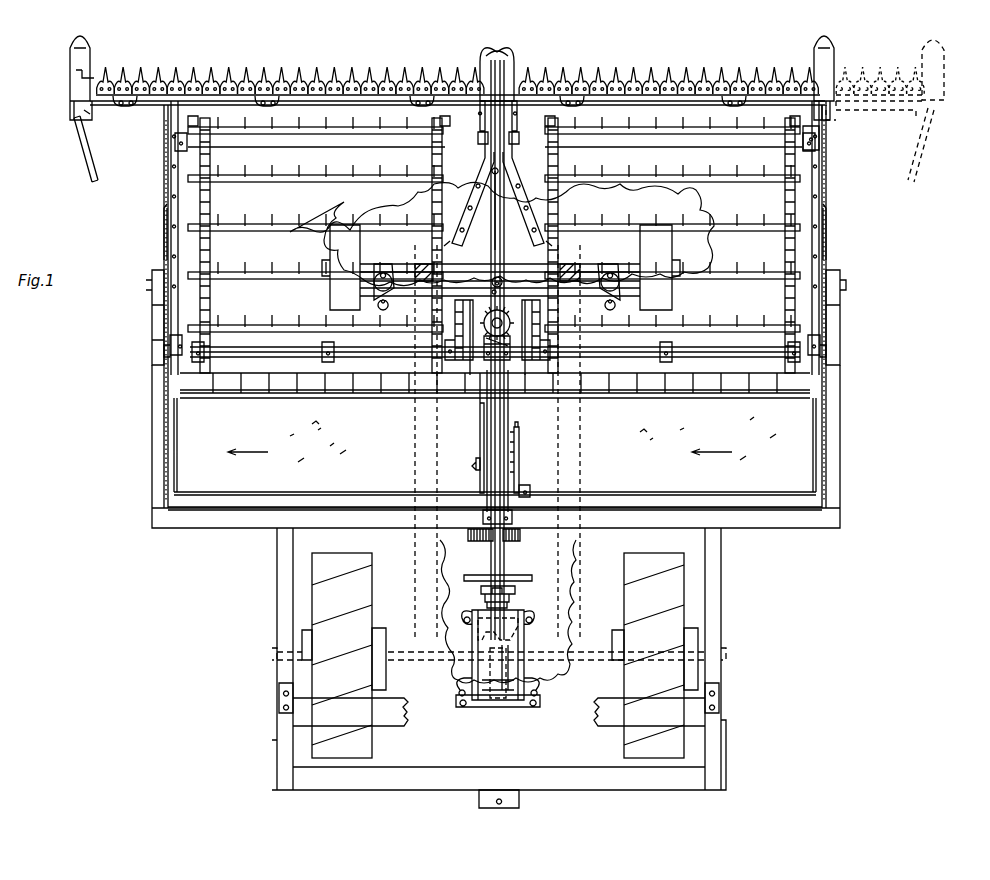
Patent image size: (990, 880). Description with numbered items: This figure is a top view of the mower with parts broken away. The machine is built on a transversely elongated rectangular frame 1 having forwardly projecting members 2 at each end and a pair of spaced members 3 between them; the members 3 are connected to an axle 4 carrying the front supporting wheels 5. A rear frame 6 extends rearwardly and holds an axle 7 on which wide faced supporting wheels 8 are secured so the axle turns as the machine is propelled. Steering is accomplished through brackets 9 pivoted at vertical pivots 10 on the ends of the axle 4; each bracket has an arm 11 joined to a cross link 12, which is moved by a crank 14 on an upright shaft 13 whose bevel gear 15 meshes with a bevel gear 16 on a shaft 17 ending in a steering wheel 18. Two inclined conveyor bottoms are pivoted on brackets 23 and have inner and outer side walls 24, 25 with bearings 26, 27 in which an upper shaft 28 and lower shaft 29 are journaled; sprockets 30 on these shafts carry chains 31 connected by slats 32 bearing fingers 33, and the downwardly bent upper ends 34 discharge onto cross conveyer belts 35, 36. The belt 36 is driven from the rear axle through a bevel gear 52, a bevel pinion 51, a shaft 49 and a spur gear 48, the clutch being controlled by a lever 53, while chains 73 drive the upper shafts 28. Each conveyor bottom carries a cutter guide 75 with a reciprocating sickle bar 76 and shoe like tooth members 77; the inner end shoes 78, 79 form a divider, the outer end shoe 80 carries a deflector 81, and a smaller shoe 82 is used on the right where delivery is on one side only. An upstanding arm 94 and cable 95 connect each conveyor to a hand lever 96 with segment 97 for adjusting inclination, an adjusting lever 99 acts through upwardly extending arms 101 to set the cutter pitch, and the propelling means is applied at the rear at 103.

The frame 1 is at (152, 415).
The forwardly projecting members 2 is at (152, 320).
The spaced members 3 is at (416, 320).
The axle 4 is at (504, 270).
The front supporting wheels 5 is at (501, 267).
The rear frame 6 is at (278, 616).
The rear axle 7 is at (535, 652).
The wide faced supporting wheels 8 is at (344, 566).
The brackets 9 is at (363, 292).
The vertical pivots 10 is at (384, 266).
The arm 11 is at (376, 300).
The cross link 12 is at (447, 284).
The upright shaft 13 is at (482, 360).
The crank 14 is at (494, 276).
The bevel gear 15 is at (508, 322).
The bevel gear 16 is at (516, 360).
The steering shaft 17 is at (488, 472).
The steering wheel 18 is at (532, 578).
The upwardly extending brackets 23 is at (418, 264).
The inner side walls 24 is at (476, 180).
The outer side walls 25 is at (165, 185).
The bearings 26 is at (170, 154).
The bearings 27 is at (822, 153).
The upper shaft 28 is at (244, 352).
The lower shaft 29 is at (262, 160).
The sprockets 30 is at (70, 66).
The chains 31 is at (193, 243).
The slats 32 is at (236, 282).
The fingers 33 is at (276, 226).
The downwardly bent upper ends 34 is at (296, 388).
The conveyer belt 35 is at (708, 438).
The conveyer belt 36 is at (495, 454).
The spur gear 48 is at (476, 542).
The shaft 49 is at (512, 540).
The bevel pinion 51 is at (478, 630).
The bevel gear 52 is at (503, 692).
The clutch lever 53 is at (512, 592).
The chains 73 is at (452, 382).
The cutter guide 75 is at (370, 130).
The sickle bar 76 is at (176, 80).
The shoe like tooth members 77 is at (246, 72).
The inner end shoe 78 is at (488, 80).
The inner end shoe 79 is at (510, 60).
The outer end shoes 80 is at (940, 74).
The deflectors 81 is at (84, 150).
The smaller outer end shoe 82 is at (830, 60).
The upstanding arm 94 is at (164, 210).
The cable 95 is at (160, 440).
The hand lever 96 is at (518, 455).
The segment 97 is at (518, 473).
The adjusting lever 99 is at (478, 430).
The upwardly extending arms 101 is at (512, 60).
The propelling means connection 103 is at (480, 800).